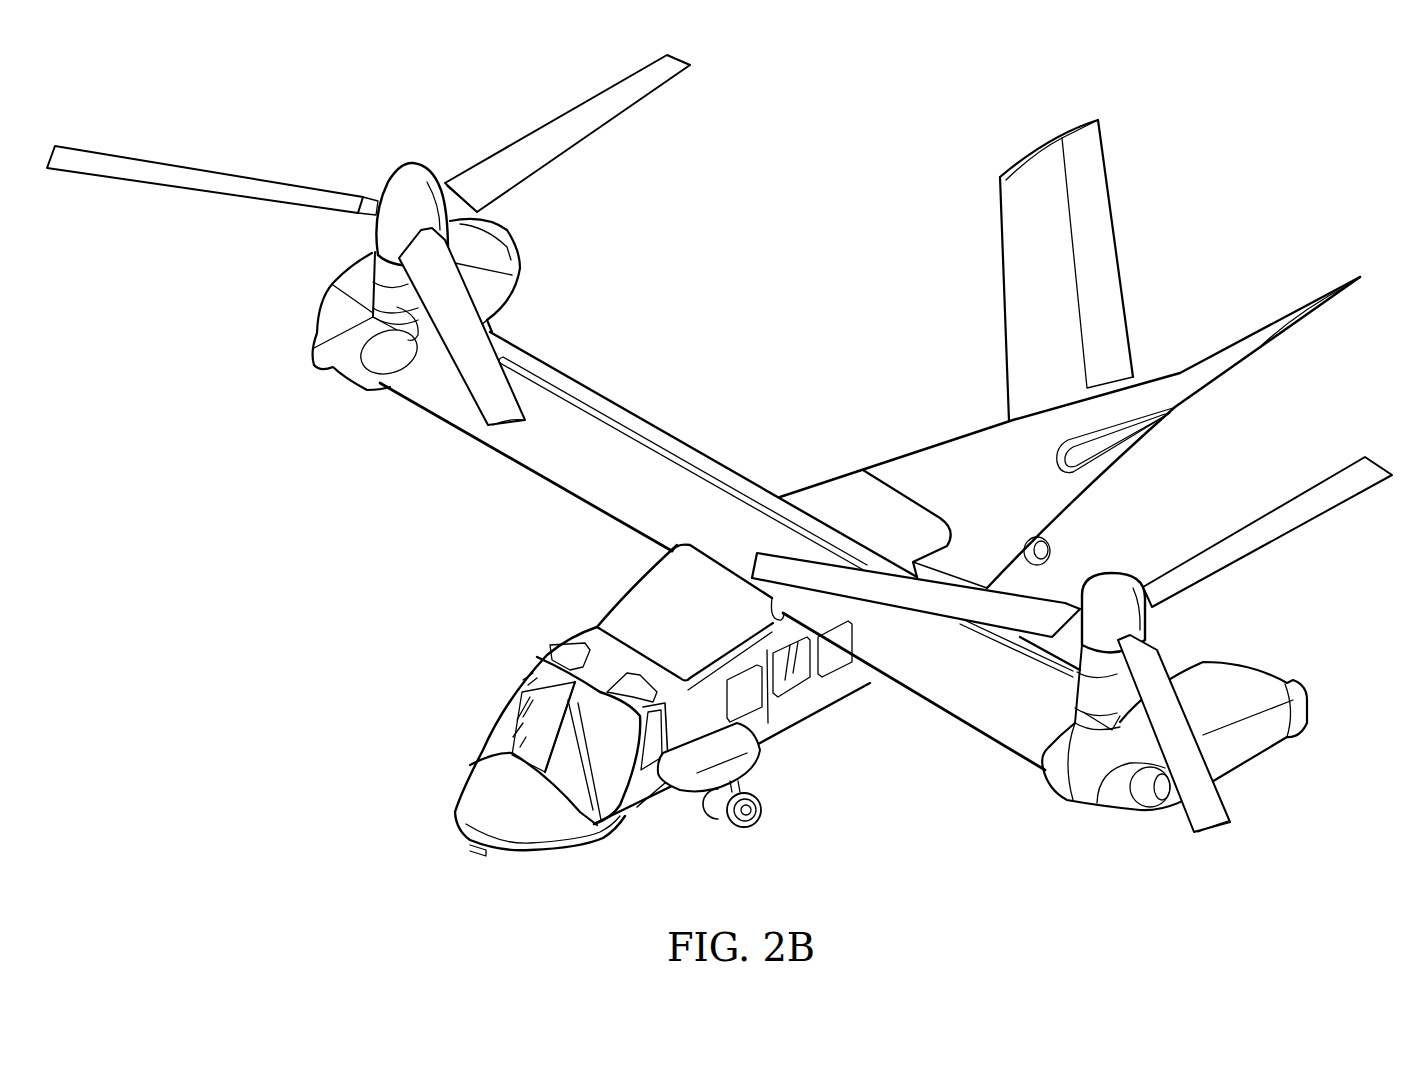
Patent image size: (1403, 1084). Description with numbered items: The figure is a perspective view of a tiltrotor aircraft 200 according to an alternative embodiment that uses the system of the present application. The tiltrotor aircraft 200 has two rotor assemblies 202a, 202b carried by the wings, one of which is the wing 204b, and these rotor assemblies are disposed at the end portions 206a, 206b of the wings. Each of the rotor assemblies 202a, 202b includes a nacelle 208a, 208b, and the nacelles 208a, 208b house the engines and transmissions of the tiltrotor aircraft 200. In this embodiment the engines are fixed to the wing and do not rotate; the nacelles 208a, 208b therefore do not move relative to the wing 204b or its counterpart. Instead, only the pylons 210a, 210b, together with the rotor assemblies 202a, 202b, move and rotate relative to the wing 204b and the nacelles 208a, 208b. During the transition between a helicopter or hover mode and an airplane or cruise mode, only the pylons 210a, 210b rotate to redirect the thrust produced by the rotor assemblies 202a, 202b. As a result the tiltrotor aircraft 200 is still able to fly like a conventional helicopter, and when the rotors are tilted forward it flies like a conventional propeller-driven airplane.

The tiltrotor aircraft 200 is at (719, 446).
The rotor assembly 202a is at (368, 240).
The rotor assembly 202b is at (1072, 644).
The wing 204b is at (558, 473).
The end portion 206a is at (526, 322).
The end portion 206b is at (1028, 792).
The nacelle 208a is at (322, 360).
The nacelle 208b is at (1253, 743).
The pylon 210a is at (382, 255).
The pylon 210b is at (1080, 668).